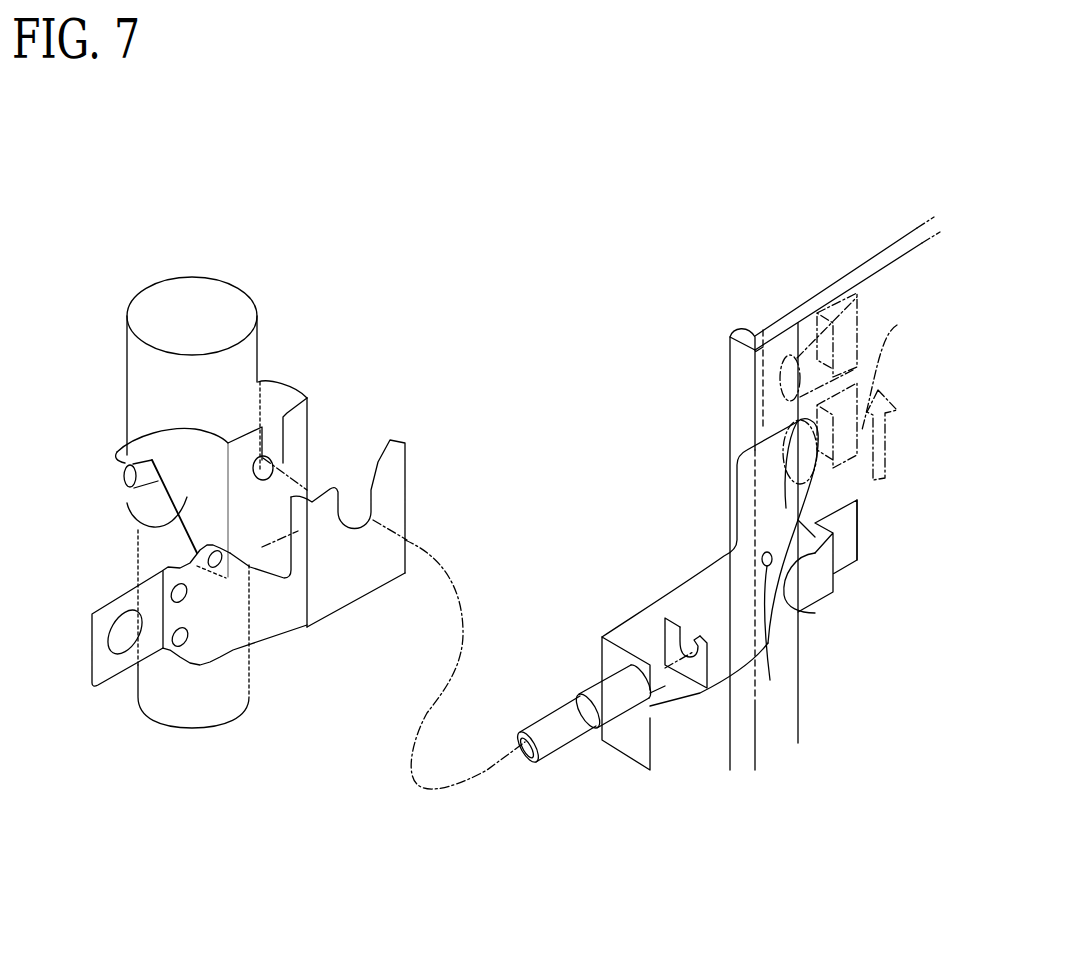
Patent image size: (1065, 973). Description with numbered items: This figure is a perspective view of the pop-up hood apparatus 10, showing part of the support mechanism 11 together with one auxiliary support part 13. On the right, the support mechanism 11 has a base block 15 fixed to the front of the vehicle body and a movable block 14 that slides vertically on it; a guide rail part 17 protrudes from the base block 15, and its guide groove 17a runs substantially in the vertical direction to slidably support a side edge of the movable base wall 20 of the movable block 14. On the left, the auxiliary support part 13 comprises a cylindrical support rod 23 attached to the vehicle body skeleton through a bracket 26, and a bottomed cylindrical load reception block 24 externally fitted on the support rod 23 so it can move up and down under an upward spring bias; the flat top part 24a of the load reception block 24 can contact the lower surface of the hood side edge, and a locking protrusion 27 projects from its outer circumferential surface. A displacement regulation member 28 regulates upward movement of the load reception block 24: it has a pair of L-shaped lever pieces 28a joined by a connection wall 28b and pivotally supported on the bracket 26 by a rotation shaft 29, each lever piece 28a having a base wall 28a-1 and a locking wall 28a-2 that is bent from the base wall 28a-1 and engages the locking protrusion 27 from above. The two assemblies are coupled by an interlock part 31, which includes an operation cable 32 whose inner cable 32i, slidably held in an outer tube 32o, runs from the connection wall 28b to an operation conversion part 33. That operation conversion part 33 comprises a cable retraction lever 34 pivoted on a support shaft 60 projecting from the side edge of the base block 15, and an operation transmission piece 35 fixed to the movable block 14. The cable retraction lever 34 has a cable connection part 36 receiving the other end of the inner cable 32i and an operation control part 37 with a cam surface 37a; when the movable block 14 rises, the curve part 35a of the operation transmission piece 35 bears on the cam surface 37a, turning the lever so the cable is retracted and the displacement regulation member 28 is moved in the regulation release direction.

The terminal connection structure 10 is at (612, 162).
The support mechanism 11 is at (740, 775).
The auxiliary support part 13 is at (324, 384).
The movable block 14 is at (903, 255).
The base block 15 is at (845, 273).
The guide rail part 17 is at (757, 350).
The guide groove 17a is at (752, 338).
The movable base wall 20 is at (870, 553).
The support rod 23 is at (157, 693).
The load reception block 24 is at (126, 373).
The flat top part 24a is at (165, 312).
The bracket 26 is at (284, 620).
The locking protrusion 27 is at (127, 480).
The displacement regulation member 28 is at (308, 457).
The lever piece 28a is at (180, 432).
The base wall 28a-1 is at (188, 500).
The locking wall 28a-2 is at (118, 466).
The connection wall 28b is at (300, 563).
The rotation shaft 29 is at (214, 572).
The interlock part 31 is at (698, 589).
The operation cable 32 is at (567, 750).
The inner cable 32i is at (497, 763).
The outer tube 32o is at (545, 721).
The operation conversion part 33 is at (821, 625).
The cable retraction lever 34 is at (742, 559).
The operation transmission piece 35 is at (820, 562).
The curve part 35a is at (788, 612).
The cable connection part 36 is at (713, 690).
The operation control part 37 is at (786, 508).
The cam surface 37a is at (800, 515).
The support shaft 60 is at (770, 680).